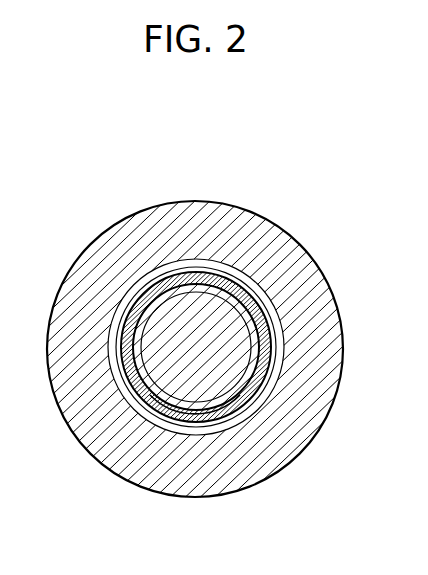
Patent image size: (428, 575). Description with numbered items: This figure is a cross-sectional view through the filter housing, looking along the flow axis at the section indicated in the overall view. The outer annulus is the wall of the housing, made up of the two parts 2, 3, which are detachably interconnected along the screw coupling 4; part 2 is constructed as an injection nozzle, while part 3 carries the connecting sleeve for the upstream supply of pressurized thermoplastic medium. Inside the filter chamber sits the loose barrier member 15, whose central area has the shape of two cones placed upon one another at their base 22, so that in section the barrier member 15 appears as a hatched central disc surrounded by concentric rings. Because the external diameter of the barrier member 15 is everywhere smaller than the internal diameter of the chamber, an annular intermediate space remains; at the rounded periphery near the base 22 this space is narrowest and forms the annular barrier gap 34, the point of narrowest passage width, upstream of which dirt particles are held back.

The housing part 2 is at (254, 294).
The housing part 3 is at (108, 260).
The screw coupling 4 is at (107, 340).
The barrier member 15 is at (217, 318).
The base 22 is at (256, 336).
The annular barrier gap 34 is at (217, 413).